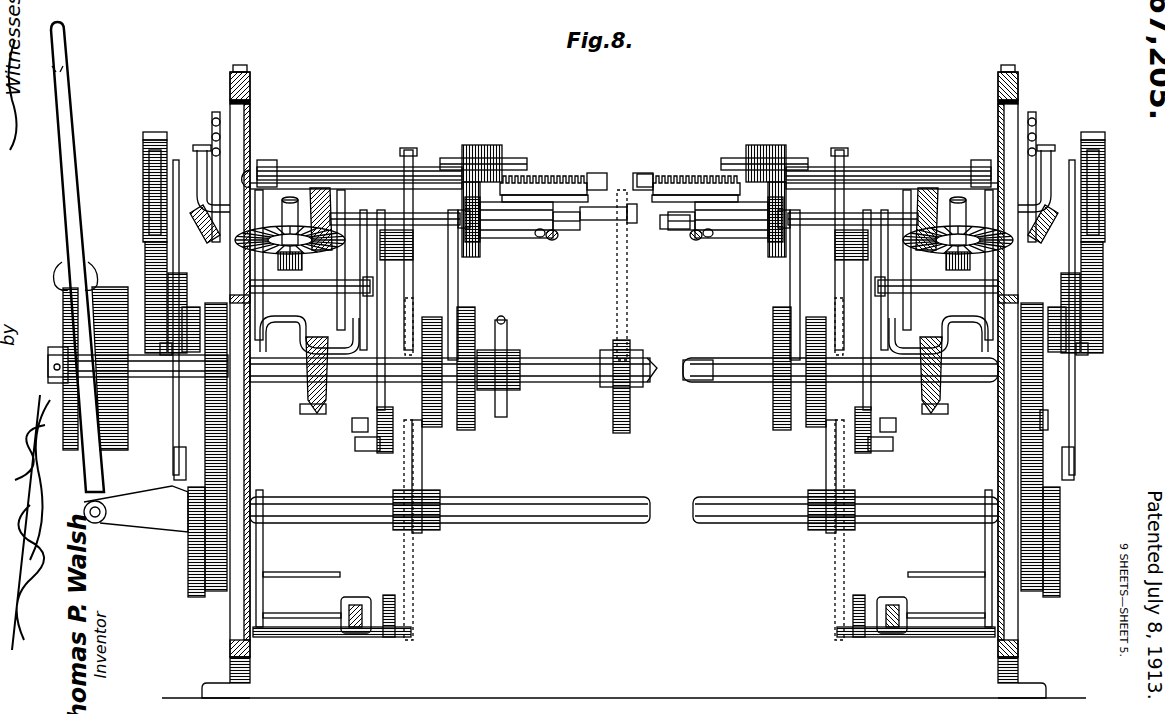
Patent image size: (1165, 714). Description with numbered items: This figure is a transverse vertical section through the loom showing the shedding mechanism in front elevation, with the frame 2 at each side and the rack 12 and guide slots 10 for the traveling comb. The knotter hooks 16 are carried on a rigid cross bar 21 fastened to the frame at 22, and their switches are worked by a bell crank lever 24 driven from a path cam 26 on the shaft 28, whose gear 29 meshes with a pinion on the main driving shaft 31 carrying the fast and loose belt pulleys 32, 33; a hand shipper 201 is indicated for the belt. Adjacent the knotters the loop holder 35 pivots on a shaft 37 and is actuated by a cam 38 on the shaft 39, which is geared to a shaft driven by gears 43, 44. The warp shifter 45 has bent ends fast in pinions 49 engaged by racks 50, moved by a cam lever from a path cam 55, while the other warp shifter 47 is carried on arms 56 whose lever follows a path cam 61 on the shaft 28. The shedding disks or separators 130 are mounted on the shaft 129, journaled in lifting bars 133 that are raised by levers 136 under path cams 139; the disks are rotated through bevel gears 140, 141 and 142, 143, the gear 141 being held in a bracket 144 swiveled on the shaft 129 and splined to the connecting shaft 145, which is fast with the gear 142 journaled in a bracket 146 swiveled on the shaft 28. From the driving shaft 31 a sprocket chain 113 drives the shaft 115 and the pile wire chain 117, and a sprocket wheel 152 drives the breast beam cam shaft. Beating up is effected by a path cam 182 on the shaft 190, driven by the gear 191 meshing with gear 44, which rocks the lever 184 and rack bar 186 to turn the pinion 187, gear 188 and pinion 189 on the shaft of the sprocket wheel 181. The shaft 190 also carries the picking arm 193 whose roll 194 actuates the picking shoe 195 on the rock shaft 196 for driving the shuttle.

The frame 2 is at (263, 563).
The guide slots 10 is at (250, 101).
The rack 12 is at (250, 70).
The upper hook-shaped portion of the knotter 16 is at (497, 148).
The rigid cross bar 21 is at (352, 178).
The fastening of cross bar to frame 22 is at (259, 161).
The bell crank lever 24 is at (455, 296).
The path cam 26 is at (474, 428).
The shaft 28 is at (532, 386).
The gear 29 is at (1043, 426).
The main driving shaft 31 is at (655, 384).
The fast belt pulley 32 is at (105, 500).
The loose belt pulley 33 is at (62, 327).
The loop holder 35 is at (586, 176).
The shaft 37 is at (641, 174).
The cam 38 is at (556, 240).
The shaft 39 is at (572, 228).
The gear 43 is at (147, 284).
The gear 44 is at (204, 430).
The warp shifter 45 is at (527, 163).
The warp shifter 47 is at (420, 178).
The pinions 49 is at (143, 150).
The racks 50 is at (143, 219).
The path cam 55 is at (188, 352).
The arms 56 is at (412, 305).
The path cam 61 is at (432, 428).
The sprocket chain 113 is at (616, 320).
The shaft 115 is at (678, 230).
The chain 117 is at (414, 568).
The shaft 129 is at (512, 242).
The disks or separators 130 is at (476, 243).
The lifting bars 133 is at (355, 430).
The levers 136 is at (357, 446).
The path cams 139 is at (380, 453).
The bevel gear 140 is at (302, 190).
The bevel gear 141 is at (316, 190).
The bevel gear 142 is at (298, 360).
The bevel gear 143 is at (310, 408).
The bracket 144 is at (340, 258).
The connecting shaft 145 is at (290, 198).
The bracket 146 is at (624, 329).
The sprocket wheel 152 is at (506, 342).
The sprocket wheel 181 is at (210, 118).
The path cam 182 is at (190, 568).
The lever 184 is at (182, 498).
The rack bar 186 is at (174, 427).
The pinion 187 is at (168, 256).
The gear 188 is at (164, 355).
The pinion 189 is at (150, 130).
The shaft 190 is at (640, 524).
The gear 191 is at (213, 590).
The picking arm 193 is at (424, 473).
The roll 194 is at (395, 503).
The picking shoe 195 is at (388, 596).
The rock shaft 196 is at (355, 634).
The hand shipper 201 is at (78, 175).